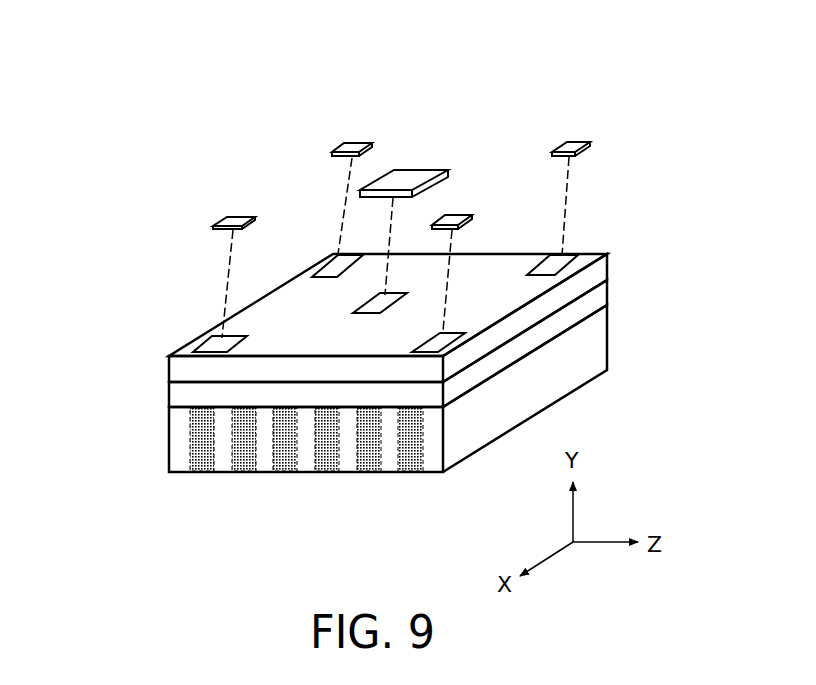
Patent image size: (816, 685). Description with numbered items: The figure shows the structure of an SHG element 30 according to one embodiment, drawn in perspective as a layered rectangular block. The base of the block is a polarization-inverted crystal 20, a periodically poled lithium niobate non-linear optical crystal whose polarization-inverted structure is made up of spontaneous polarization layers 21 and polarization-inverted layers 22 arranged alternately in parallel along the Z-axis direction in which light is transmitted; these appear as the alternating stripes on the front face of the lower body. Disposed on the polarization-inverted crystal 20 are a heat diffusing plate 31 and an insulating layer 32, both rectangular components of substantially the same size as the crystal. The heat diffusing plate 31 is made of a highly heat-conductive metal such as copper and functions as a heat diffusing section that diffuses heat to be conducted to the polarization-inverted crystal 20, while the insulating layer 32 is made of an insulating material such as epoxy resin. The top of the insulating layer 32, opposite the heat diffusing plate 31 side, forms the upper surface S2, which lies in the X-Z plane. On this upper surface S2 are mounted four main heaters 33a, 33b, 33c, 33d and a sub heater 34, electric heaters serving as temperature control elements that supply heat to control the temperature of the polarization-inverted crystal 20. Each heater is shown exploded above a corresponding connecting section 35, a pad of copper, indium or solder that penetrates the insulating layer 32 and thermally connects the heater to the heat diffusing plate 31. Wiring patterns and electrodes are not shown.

The polarization-inverted crystal 20 is at (327, 426).
The spontaneous polarization layers 21 is at (225, 462).
The polarization-inverted layers 22 is at (207, 463).
The SHG element 30 is at (405, 205).
The heat diffusing plate 31 is at (603, 298).
The insulating layer 32 is at (405, 303).
The main heater 33a is at (233, 217).
The main heater 33b is at (458, 213).
The main heater 33c is at (353, 142).
The main heater 33d is at (574, 141).
The sub heater 34 is at (410, 170).
The connecting section 35 is at (572, 257).
The upper surface S2 is at (187, 352).